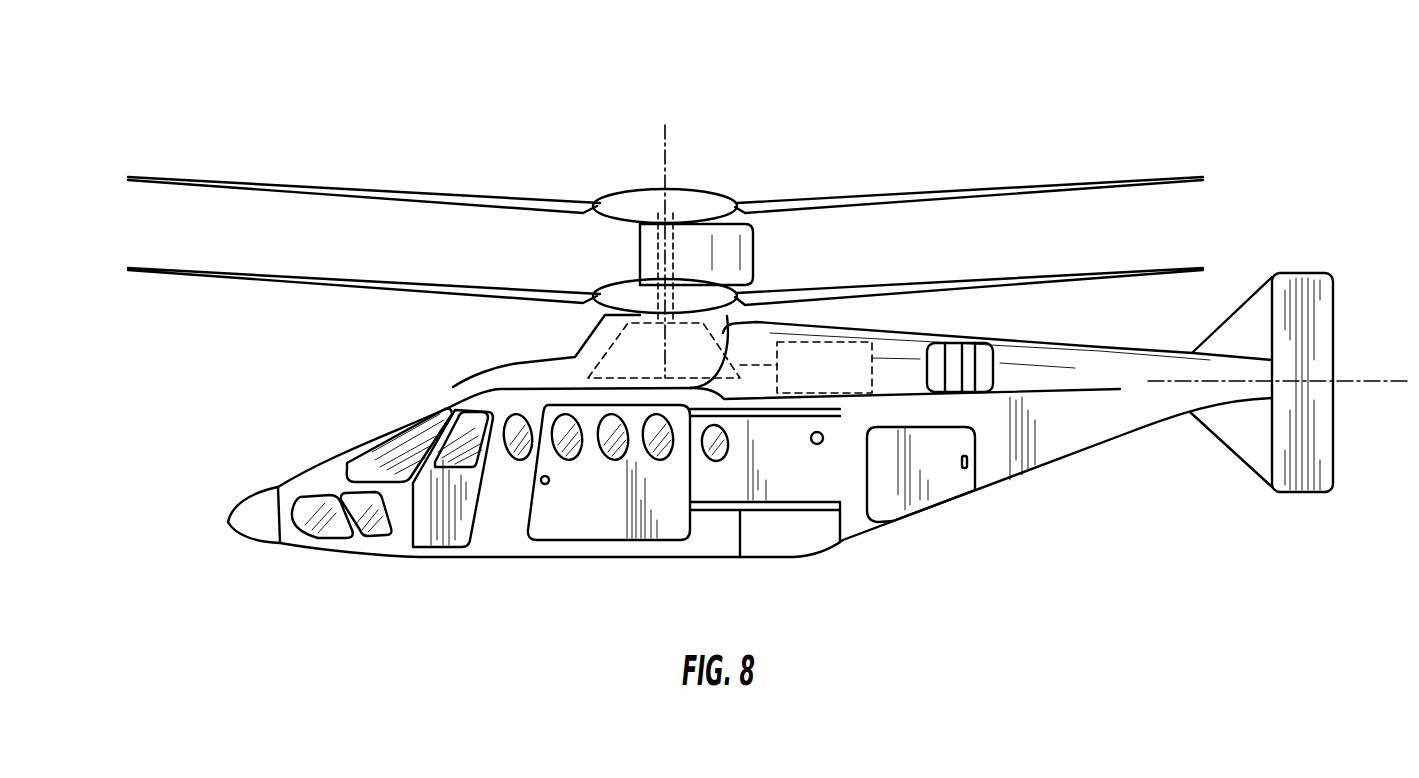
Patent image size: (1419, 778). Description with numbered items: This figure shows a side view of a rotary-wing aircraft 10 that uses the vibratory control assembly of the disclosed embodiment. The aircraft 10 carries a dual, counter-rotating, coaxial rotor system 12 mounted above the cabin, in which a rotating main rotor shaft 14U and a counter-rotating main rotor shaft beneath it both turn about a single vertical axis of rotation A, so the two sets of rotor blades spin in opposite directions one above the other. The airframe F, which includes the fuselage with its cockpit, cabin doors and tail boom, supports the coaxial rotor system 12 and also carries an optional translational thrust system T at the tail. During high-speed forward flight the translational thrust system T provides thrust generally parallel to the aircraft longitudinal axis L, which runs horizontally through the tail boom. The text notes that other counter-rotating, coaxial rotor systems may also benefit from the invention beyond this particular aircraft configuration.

The rotary-wing aircraft 10 is at (822, 137).
The dual, counter-rotating, coaxial rotor system 12 is at (665, 220).
The rotating main rotor shaft 14U is at (673, 257).
The axis of rotation A is at (665, 144).
The airframe F is at (590, 528).
The translational thrust system T is at (1300, 256).
The aircraft longitudinal axis L is at (1393, 381).